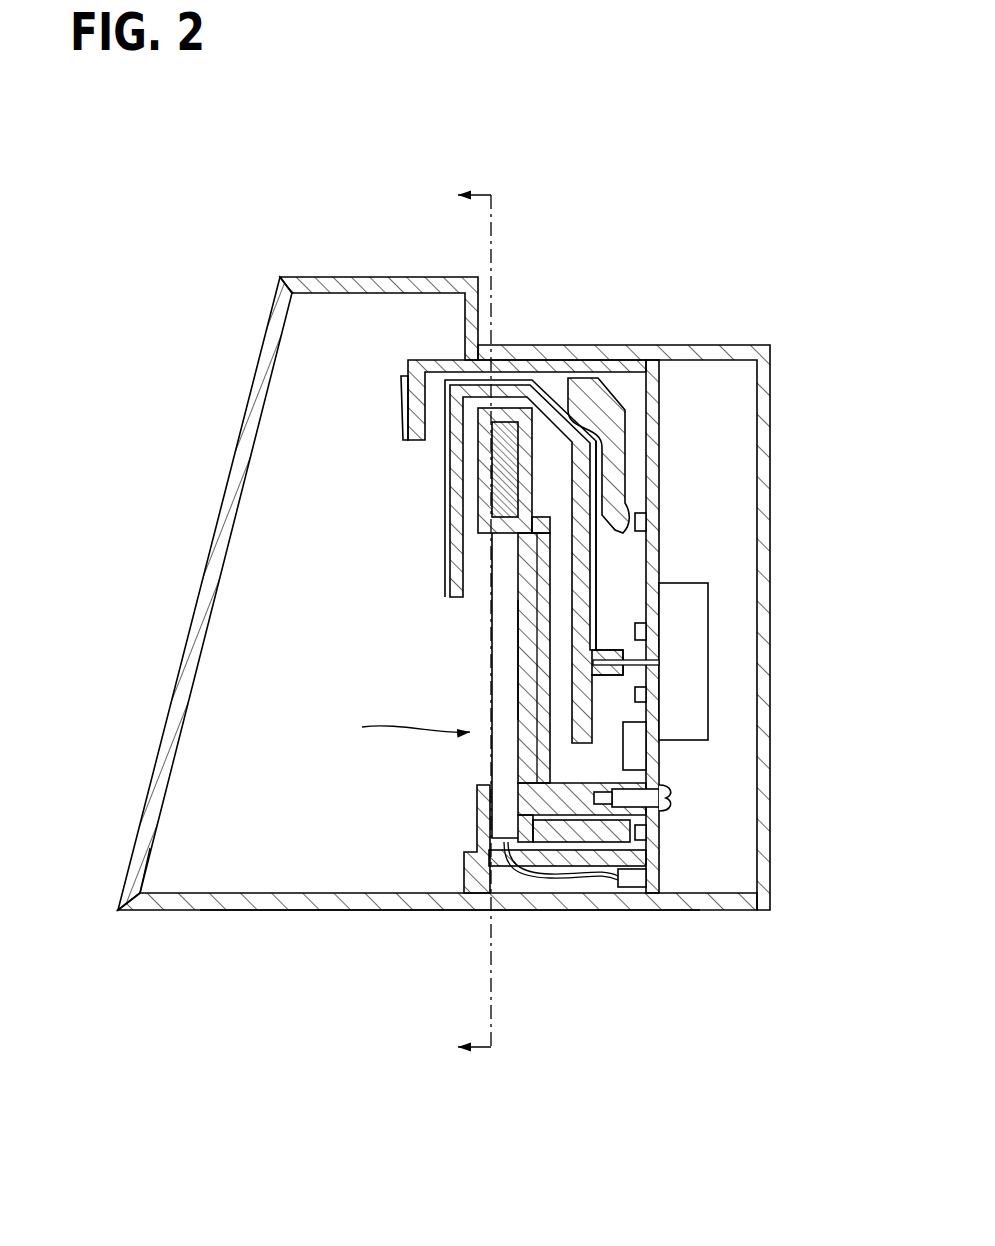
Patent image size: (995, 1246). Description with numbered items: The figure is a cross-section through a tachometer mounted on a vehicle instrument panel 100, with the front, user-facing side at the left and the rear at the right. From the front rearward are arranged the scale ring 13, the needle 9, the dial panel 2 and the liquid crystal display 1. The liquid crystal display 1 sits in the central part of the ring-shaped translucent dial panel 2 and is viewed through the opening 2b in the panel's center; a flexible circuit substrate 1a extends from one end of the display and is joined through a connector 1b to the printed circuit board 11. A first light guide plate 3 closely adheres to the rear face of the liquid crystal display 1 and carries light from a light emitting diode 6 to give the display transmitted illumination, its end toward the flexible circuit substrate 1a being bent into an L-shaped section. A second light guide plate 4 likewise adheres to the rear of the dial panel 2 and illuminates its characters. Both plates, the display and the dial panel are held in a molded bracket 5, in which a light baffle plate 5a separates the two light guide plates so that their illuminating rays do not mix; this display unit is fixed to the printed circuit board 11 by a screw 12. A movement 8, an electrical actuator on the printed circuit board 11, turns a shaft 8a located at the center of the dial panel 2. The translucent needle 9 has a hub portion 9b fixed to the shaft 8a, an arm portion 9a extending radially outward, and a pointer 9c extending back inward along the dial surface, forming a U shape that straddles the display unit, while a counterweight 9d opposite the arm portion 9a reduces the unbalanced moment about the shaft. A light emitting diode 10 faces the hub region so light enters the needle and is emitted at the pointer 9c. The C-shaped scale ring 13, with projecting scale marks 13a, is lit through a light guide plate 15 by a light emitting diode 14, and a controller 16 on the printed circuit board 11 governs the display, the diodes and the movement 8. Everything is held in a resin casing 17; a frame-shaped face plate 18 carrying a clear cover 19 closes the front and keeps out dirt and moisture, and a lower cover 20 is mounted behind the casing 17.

The instrument panel 100 is at (128, 226).
The liquid crystal display 1 is at (488, 636).
The flexible circuit substrate 1a is at (575, 912).
The connector 1b is at (633, 912).
The dial panel 2 is at (474, 453).
The opening 2b is at (478, 783).
The first light guide plate 3 is at (517, 660).
The second light guide plate 4 is at (492, 477).
The bracket 5 is at (590, 777).
The light baffle plate 5a is at (502, 533).
The light emitting diode 6 is at (646, 830).
The movement 8 is at (712, 605).
The shaft 8a is at (628, 652).
The needle 9 is at (448, 518).
The arm portion 9a is at (594, 543).
The hub portion 9b is at (605, 650).
The pointer 9c is at (444, 547).
The counterweight 9d is at (517, 707).
The light emitting diode 10 is at (658, 657).
The printed circuit board 11 is at (660, 388).
The screw 12 is at (672, 800).
The scale ring 13 is at (435, 355).
The scale marks 13a is at (398, 397).
The light emitting diode 14 is at (638, 513).
The light guide plate 15 is at (627, 429).
The controller 16 is at (633, 722).
The casing 17 is at (532, 912).
The face plate 18 is at (263, 912).
The clear cover 19 is at (150, 848).
The lower cover 20 is at (697, 912).